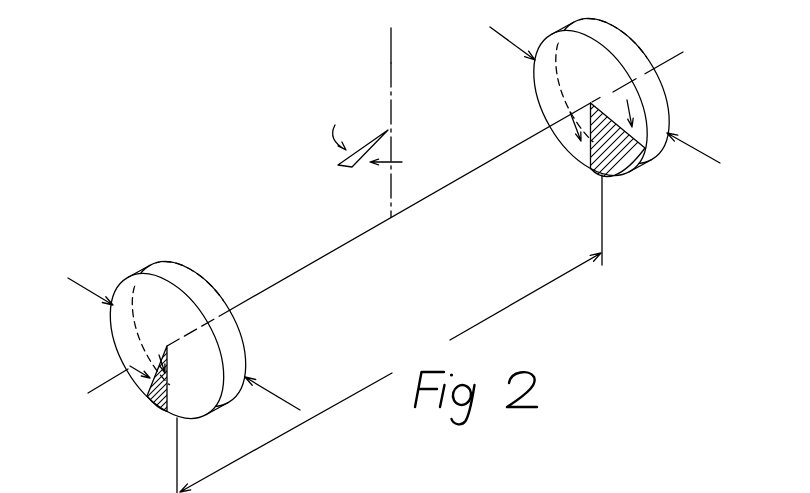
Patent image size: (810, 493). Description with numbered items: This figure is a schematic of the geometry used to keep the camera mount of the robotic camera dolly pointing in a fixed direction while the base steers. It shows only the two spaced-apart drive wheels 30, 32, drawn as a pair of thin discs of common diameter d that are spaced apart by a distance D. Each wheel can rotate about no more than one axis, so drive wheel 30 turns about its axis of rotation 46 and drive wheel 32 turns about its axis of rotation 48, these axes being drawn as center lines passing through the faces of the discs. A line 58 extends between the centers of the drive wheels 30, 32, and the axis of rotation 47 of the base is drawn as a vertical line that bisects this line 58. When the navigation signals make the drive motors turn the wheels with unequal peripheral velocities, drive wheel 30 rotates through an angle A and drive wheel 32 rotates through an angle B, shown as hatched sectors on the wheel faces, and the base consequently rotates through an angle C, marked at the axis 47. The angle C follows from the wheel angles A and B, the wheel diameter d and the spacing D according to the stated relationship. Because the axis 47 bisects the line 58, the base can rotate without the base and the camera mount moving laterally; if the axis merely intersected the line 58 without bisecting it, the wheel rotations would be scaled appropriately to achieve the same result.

The drive wheel 30 is at (182, 264).
The drive wheel 32 is at (643, 50).
The axis of rotation 46 is at (107, 380).
The axis of rotation of the base 47 is at (391, 70).
The axis of rotation 48 is at (676, 58).
The line extending between the centers of the drive wheels 58 is at (432, 200).
The angle of rotation of drive wheel 30 A is at (147, 402).
The angle of rotation of drive wheel 32 B is at (623, 172).
The angle of rotation of the base C is at (338, 168).
The distance between the drive wheels D is at (389, 334).
The diameter of the drive wheels d is at (384, 212).